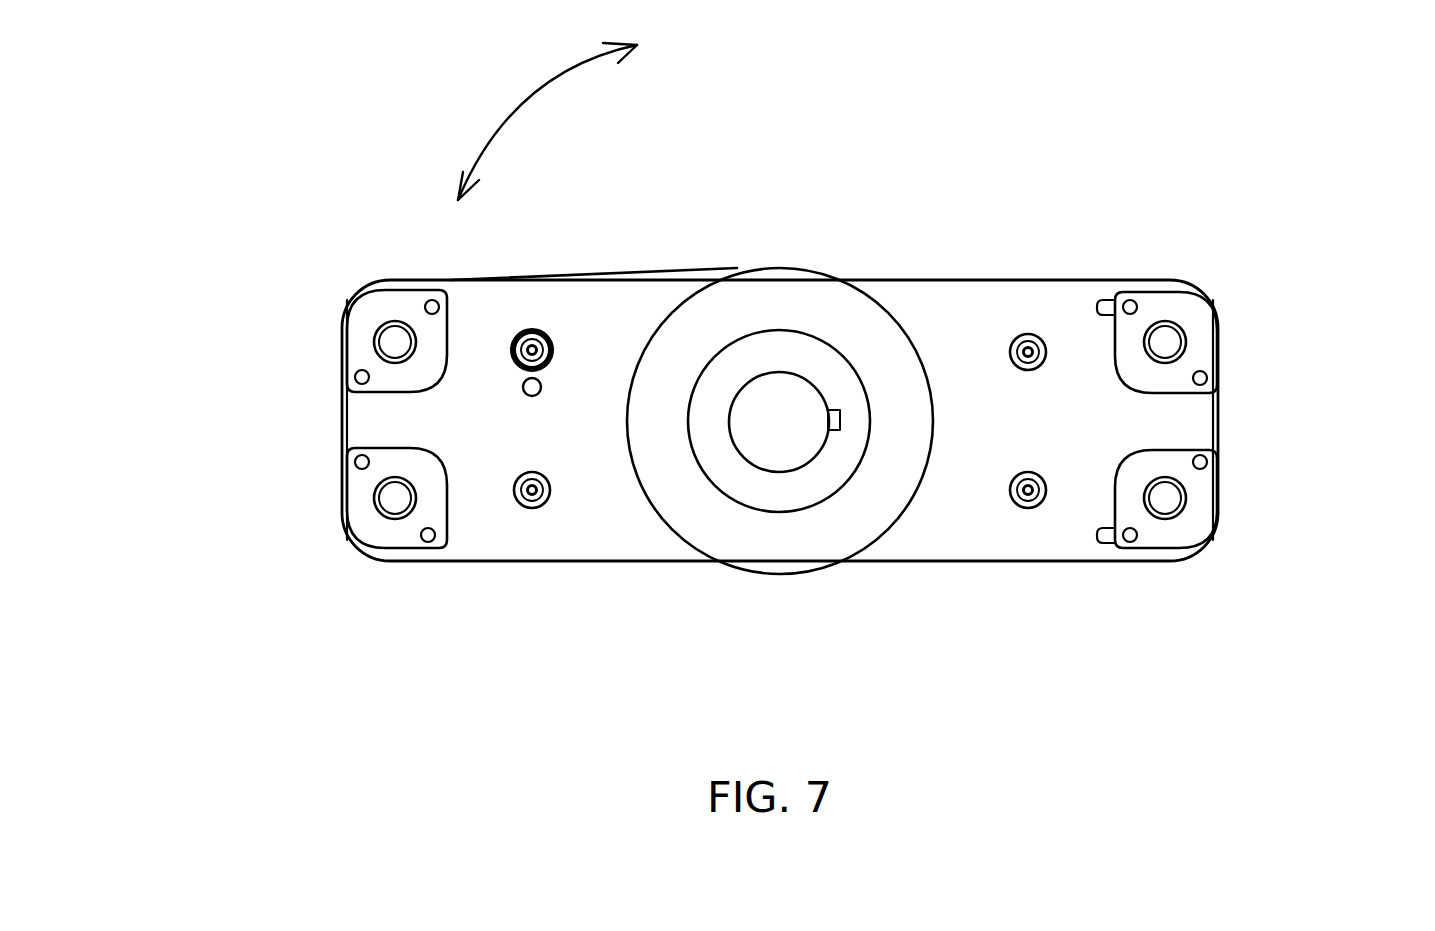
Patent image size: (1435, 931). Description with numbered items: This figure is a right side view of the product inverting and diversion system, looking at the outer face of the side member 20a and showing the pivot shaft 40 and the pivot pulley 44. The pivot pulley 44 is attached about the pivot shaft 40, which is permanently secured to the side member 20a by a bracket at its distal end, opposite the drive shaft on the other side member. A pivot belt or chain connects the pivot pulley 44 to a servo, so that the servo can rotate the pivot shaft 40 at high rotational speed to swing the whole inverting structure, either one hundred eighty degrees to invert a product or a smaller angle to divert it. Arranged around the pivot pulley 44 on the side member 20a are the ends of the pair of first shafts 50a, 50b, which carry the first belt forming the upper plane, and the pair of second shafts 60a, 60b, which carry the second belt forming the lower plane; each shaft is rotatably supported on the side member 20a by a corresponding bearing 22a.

The side member 20a is at (588, 355).
The bearing 22a is at (343, 500).
The pivot shaft 40 is at (772, 423).
The pivot pulley 44 is at (663, 472).
The first shaft 50a is at (1167, 341).
The first shaft 50b is at (392, 343).
The second shaft 60a is at (1164, 498).
The second shaft 60b is at (390, 497).